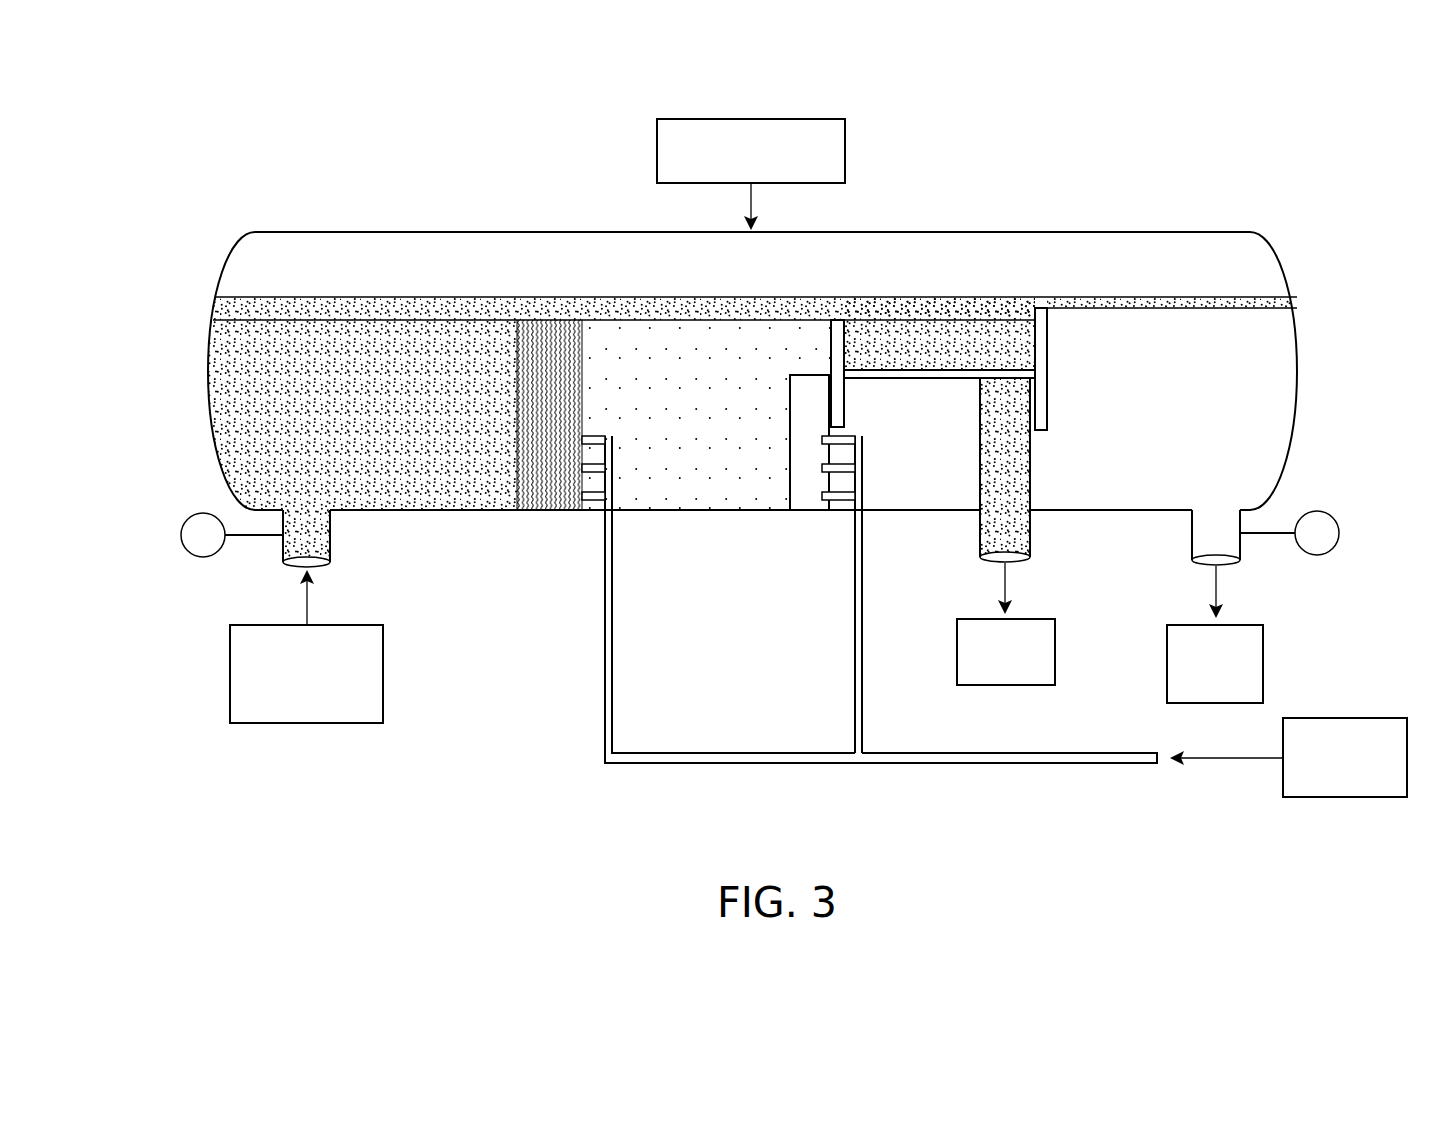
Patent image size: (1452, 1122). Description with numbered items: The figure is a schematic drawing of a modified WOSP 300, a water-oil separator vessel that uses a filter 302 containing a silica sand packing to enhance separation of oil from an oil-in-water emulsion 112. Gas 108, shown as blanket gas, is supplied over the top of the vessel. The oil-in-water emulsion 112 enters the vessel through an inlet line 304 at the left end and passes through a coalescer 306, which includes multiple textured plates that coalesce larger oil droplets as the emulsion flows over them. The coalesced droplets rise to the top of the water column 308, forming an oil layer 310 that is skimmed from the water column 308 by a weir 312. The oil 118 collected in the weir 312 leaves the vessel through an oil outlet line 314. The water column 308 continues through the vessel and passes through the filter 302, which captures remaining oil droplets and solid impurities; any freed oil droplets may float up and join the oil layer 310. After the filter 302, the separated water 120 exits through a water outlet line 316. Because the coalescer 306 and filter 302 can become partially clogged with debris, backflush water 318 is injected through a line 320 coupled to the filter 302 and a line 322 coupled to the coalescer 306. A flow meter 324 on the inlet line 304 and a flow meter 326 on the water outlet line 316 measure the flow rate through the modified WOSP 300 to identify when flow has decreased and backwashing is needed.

The gas 108 is at (722, 118).
The oil-in-water emulsion stream 112 is at (230, 680).
The oil 118 is at (978, 688).
The separated water 120 is at (1167, 675).
The modified WOSP 300 is at (407, 100).
The filter 302 is at (790, 453).
The inlet line 304 is at (333, 538).
The coalescer 306 is at (583, 360).
The water column 308 is at (272, 375).
The oil layer 310 is at (245, 312).
The weir 312 is at (1047, 350).
The oil outlet line 314 is at (980, 540).
The water outlet line 316 is at (1192, 541).
The backflush water 318 is at (1350, 797).
The line 320 is at (854, 645).
The line 322 is at (604, 655).
The flow meter 324 is at (190, 558).
The flow meter 326 is at (1318, 556).